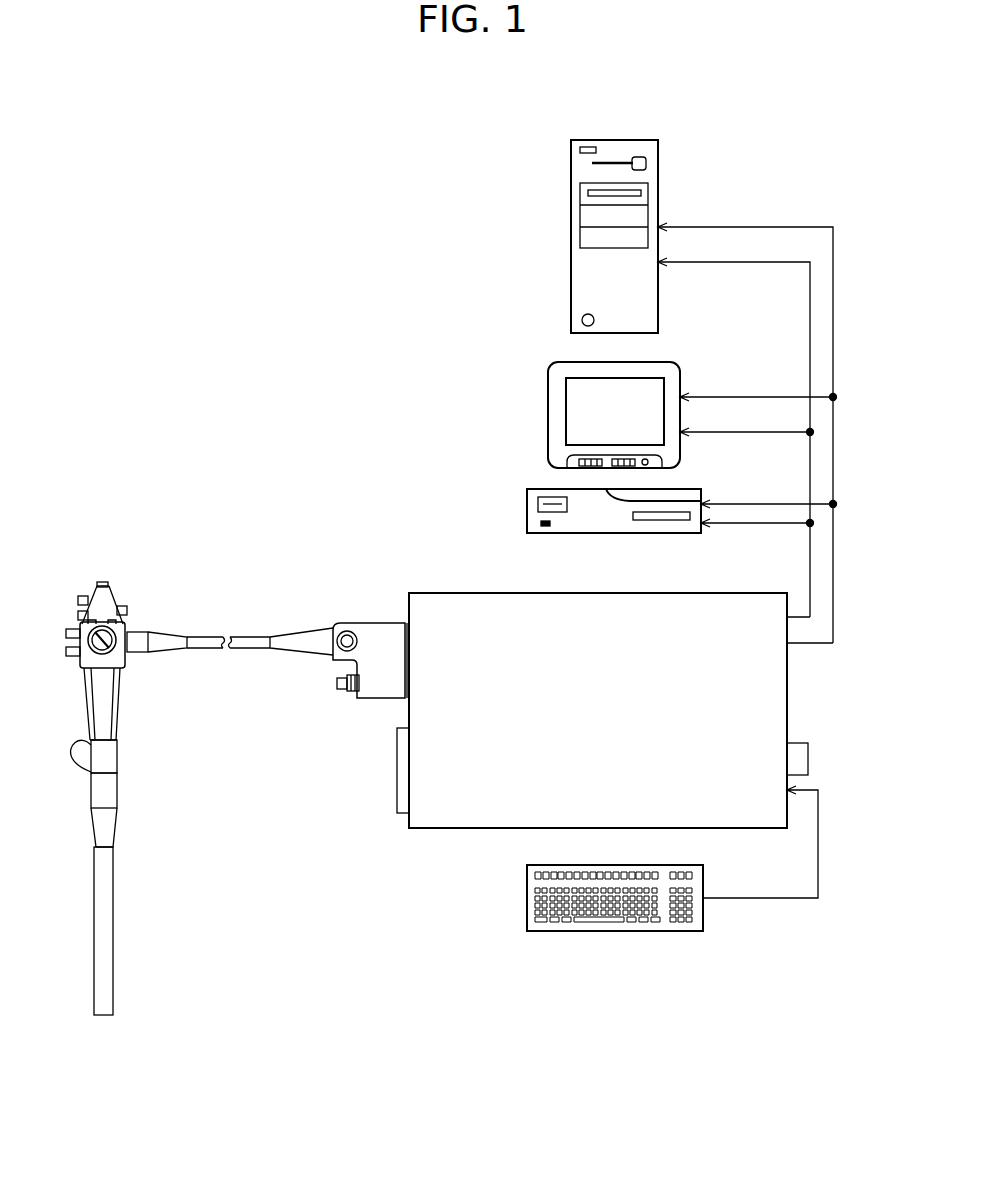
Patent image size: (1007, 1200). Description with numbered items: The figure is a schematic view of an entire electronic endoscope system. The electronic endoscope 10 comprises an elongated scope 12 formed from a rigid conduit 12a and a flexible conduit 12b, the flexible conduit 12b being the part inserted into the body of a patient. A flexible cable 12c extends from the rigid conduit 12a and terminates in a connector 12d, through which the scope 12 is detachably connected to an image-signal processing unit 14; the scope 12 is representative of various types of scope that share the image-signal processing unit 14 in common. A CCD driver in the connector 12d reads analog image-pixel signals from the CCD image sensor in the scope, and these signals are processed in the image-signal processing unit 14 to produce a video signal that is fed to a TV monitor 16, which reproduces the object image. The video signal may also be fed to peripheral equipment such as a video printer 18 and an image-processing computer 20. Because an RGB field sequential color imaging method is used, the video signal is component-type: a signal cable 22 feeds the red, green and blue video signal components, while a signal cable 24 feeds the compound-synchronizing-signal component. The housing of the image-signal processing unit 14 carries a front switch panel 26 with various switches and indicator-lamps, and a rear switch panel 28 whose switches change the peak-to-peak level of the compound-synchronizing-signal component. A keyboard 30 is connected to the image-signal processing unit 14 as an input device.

The electronic endoscope 10 is at (385, 556).
The elongated scope 12 is at (124, 698).
The rigid conduit 12a is at (92, 698).
The flexible conduit 12b is at (106, 929).
The flexible cable 12c is at (250, 635).
The connector 12d is at (377, 632).
The image-signal processing unit 14 is at (473, 593).
The TV monitor 16 is at (548, 415).
The video printer 18 is at (527, 508).
The image-processing computer 20 is at (569, 230).
The signal cable 22 is at (810, 558).
The signal cable 24 is at (836, 558).
The front switch panel 26 is at (397, 768).
The rear switch panel 28 is at (798, 760).
The keyboard 30 is at (611, 933).